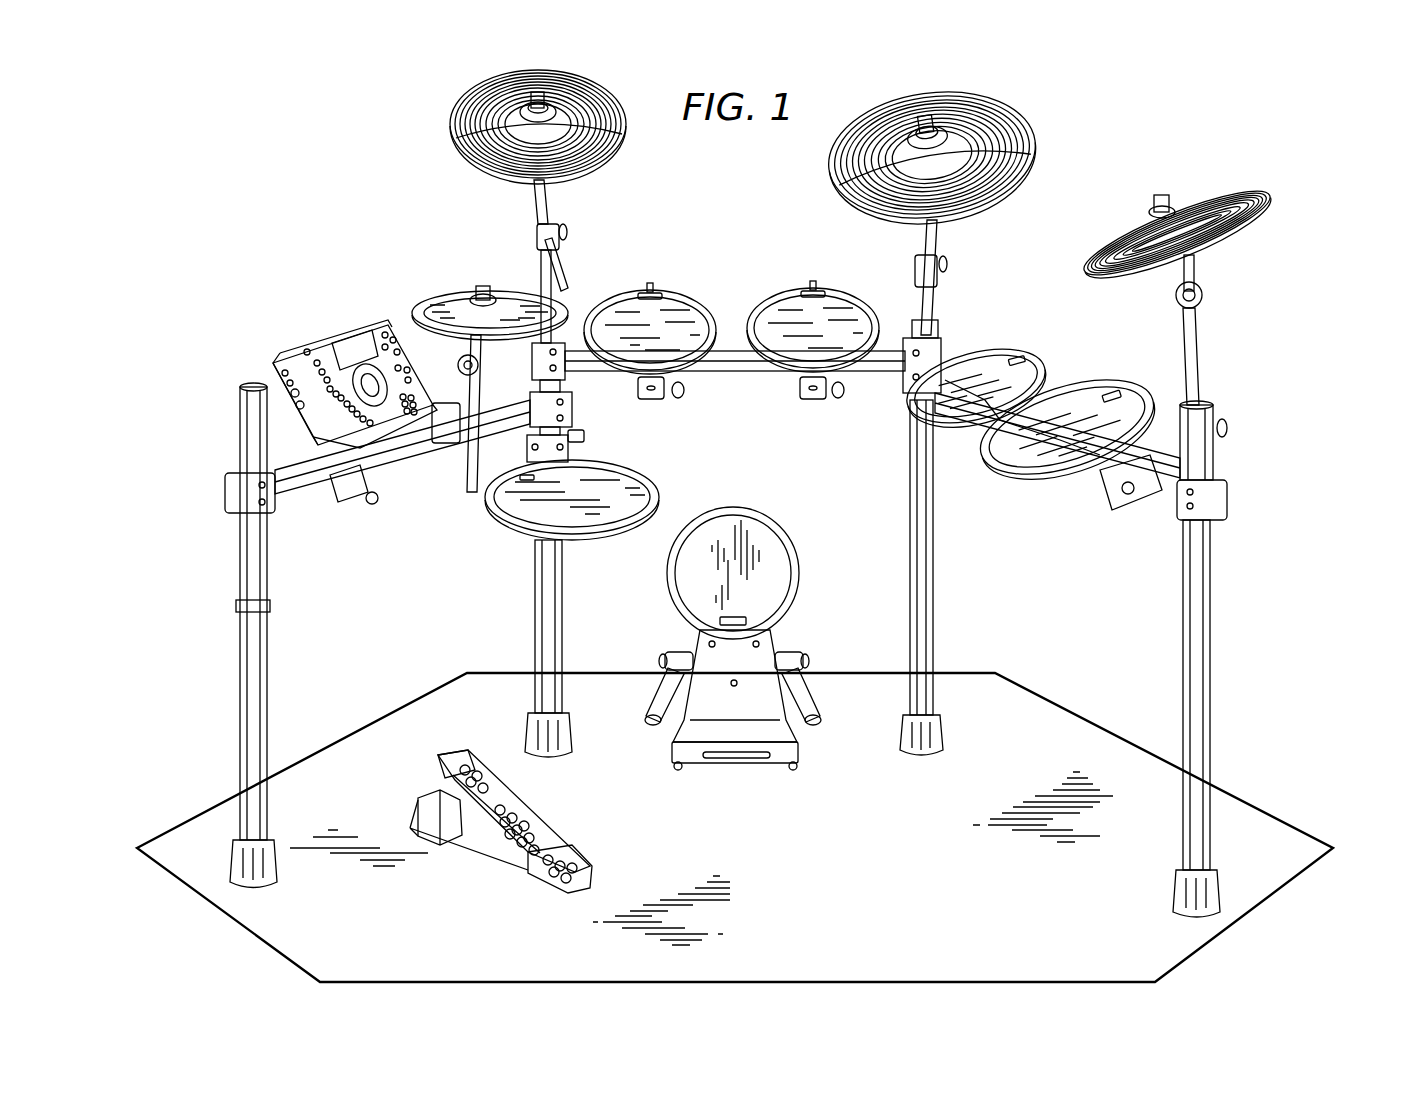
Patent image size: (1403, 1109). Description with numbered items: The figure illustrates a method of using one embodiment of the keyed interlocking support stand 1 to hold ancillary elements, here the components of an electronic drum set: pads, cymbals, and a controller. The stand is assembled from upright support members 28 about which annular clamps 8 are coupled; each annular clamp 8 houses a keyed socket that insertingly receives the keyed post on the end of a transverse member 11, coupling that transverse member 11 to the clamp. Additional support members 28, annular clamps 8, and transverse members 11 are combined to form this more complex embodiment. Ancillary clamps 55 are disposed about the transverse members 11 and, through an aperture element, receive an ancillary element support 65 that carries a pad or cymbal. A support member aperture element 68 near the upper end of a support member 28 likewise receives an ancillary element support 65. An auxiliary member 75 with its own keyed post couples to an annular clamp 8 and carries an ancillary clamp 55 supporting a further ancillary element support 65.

The keyed interlocking support stand 1 is at (1262, 700).
The annular clamp 8 is at (222, 494).
The transverse member 11 is at (736, 358).
The support member 28 is at (548, 620).
The ancillary clamp 55 is at (443, 388).
The ancillary element support 65 is at (1048, 412).
The support member aperture element 68 is at (570, 330).
The auxiliary member 75 is at (582, 440).